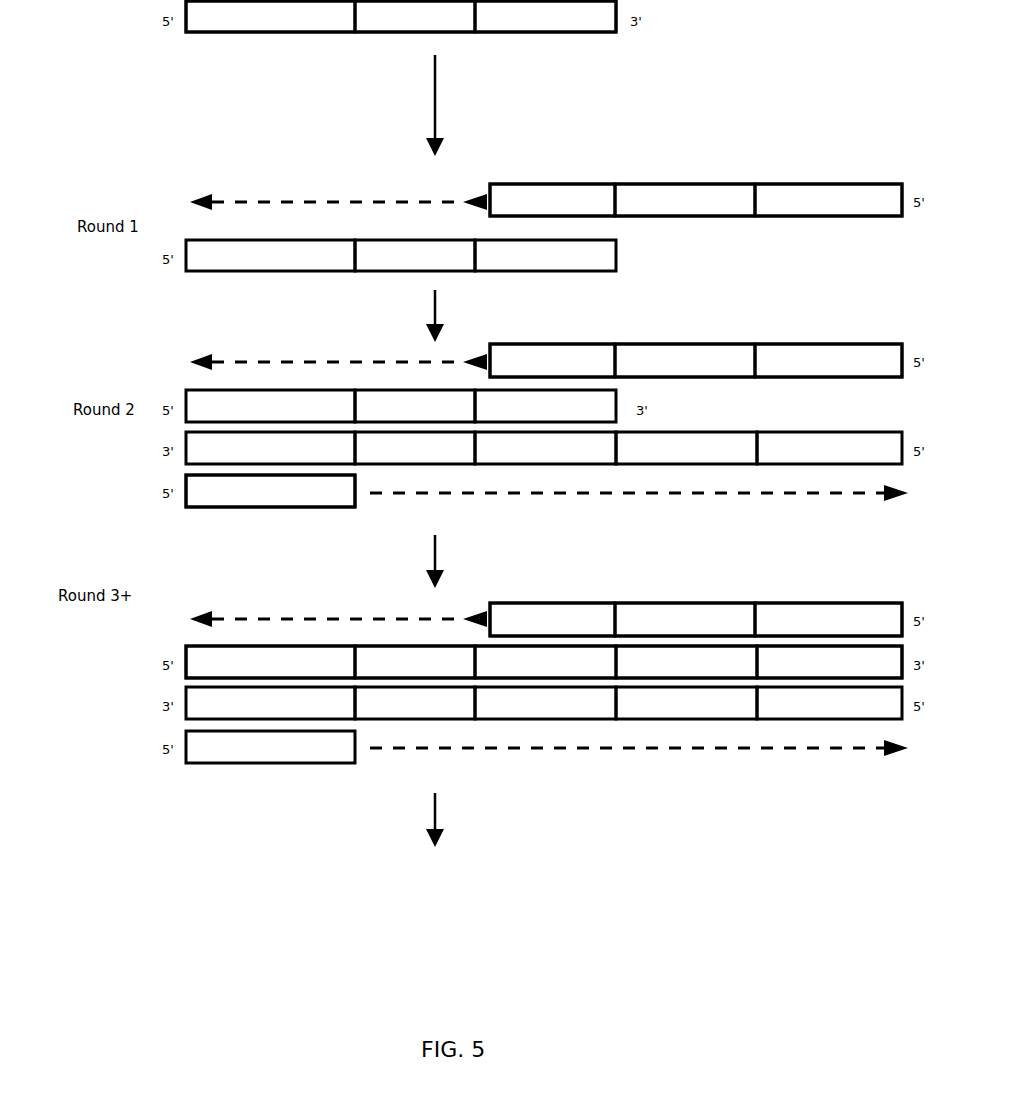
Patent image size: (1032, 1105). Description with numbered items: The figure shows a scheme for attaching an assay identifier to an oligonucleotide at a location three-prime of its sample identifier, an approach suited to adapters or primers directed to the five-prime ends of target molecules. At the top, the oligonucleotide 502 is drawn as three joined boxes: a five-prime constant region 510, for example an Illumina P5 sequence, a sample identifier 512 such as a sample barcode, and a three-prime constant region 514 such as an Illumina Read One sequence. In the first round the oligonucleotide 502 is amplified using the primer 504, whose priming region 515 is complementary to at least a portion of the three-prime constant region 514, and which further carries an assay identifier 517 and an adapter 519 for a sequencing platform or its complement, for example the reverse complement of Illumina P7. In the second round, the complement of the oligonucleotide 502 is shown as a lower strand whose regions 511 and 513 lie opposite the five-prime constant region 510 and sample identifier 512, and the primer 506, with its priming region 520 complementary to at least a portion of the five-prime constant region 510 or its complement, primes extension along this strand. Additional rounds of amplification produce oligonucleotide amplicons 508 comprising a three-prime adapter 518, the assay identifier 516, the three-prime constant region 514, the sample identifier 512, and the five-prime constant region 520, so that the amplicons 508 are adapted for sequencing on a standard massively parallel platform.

The oligonucleotide 502 is at (148, 25).
The primer 504 is at (776, 175).
The primer 506 is at (148, 494).
The oligonucleotide amplicons 508 is at (148, 669).
The 5' constant region 510 is at (270, 211).
The complementary region 511 is at (270, 575).
The sample identifier 512 is at (415, 339).
The complementary region 513 is at (415, 575).
The 3' constant region 514 is at (545, 339).
The priming region 515 is at (545, 451).
The assay identifier 516 is at (686, 662).
The assay identifier 517 is at (686, 451).
The 3' adapter 518 is at (829, 662).
The adapter 519 is at (828, 451).
The priming region 520 is at (270, 619).